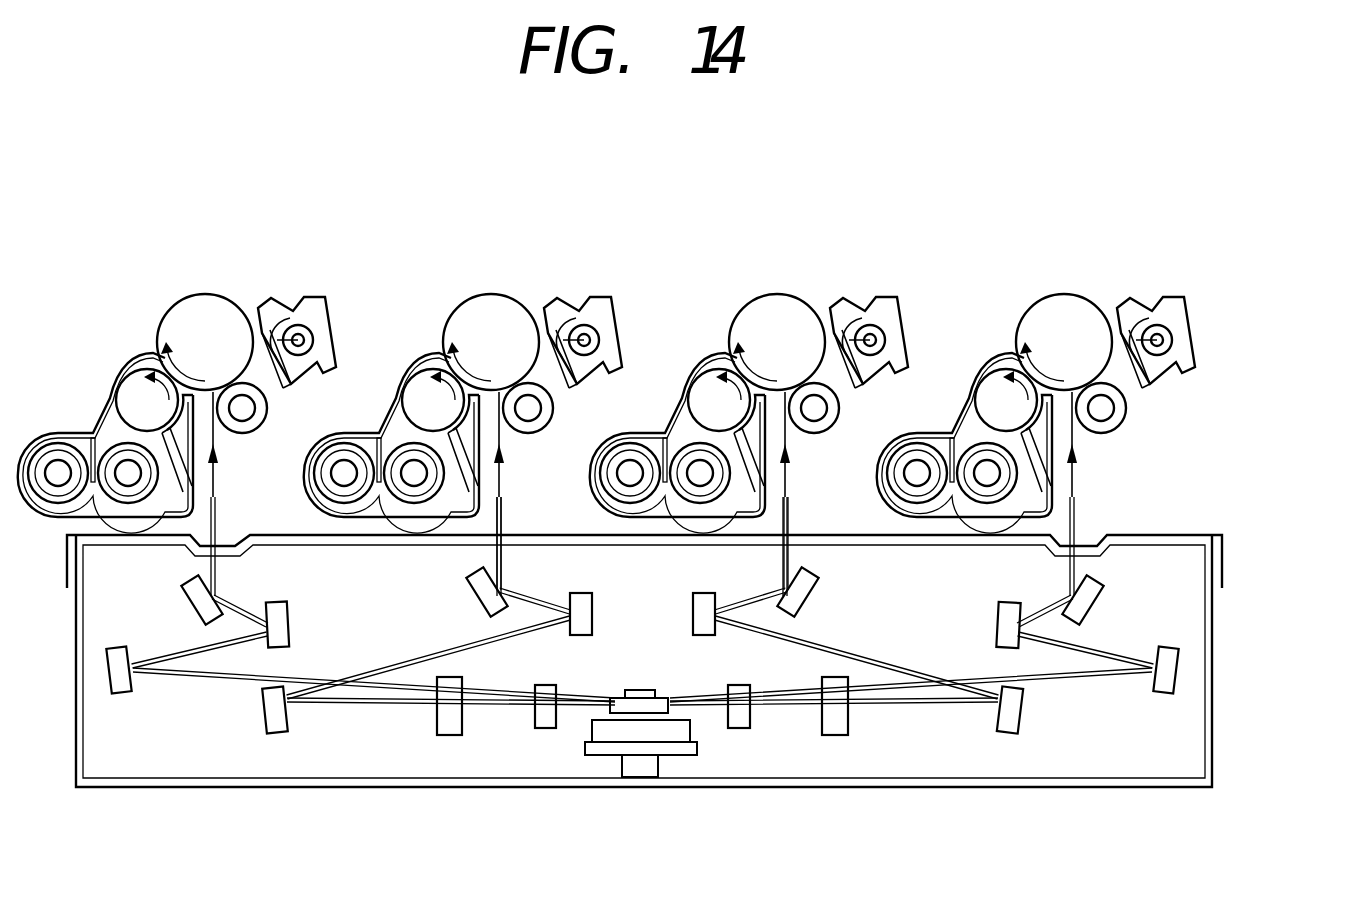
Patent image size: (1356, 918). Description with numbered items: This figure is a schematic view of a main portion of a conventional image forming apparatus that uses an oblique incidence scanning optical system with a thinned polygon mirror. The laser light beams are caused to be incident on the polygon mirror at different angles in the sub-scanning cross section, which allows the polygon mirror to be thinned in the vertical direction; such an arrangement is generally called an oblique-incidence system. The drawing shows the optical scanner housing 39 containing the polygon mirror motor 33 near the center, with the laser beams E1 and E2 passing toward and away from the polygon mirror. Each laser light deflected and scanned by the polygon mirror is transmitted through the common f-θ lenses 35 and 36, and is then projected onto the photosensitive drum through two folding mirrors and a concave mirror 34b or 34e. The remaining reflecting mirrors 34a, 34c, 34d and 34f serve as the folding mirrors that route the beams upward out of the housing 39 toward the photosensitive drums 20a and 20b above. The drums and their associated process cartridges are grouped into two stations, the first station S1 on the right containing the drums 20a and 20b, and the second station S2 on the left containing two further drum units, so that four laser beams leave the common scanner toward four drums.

The first station S1 is at (1268, 238).
The second station S2 is at (623, 238).
The photosensitive drum 20a is at (1040, 313).
The photosensitive drum 20b is at (750, 313).
The polygon mirror motor 33 is at (640, 710).
The reflecting mirror 34a is at (1180, 677).
The concave mirror 34b is at (1010, 603).
The reflecting mirror 34c is at (1093, 572).
The reflecting mirror 34d is at (1015, 733).
The concave mirror 34e is at (694, 596).
The reflecting mirror 34f is at (815, 577).
The f-θ lens 35 is at (740, 729).
The f-θ lens 36 is at (835, 736).
The optical scanner housing 39 is at (1218, 618).
The laser beam E1 is at (892, 680).
The laser beam E2 is at (884, 706).